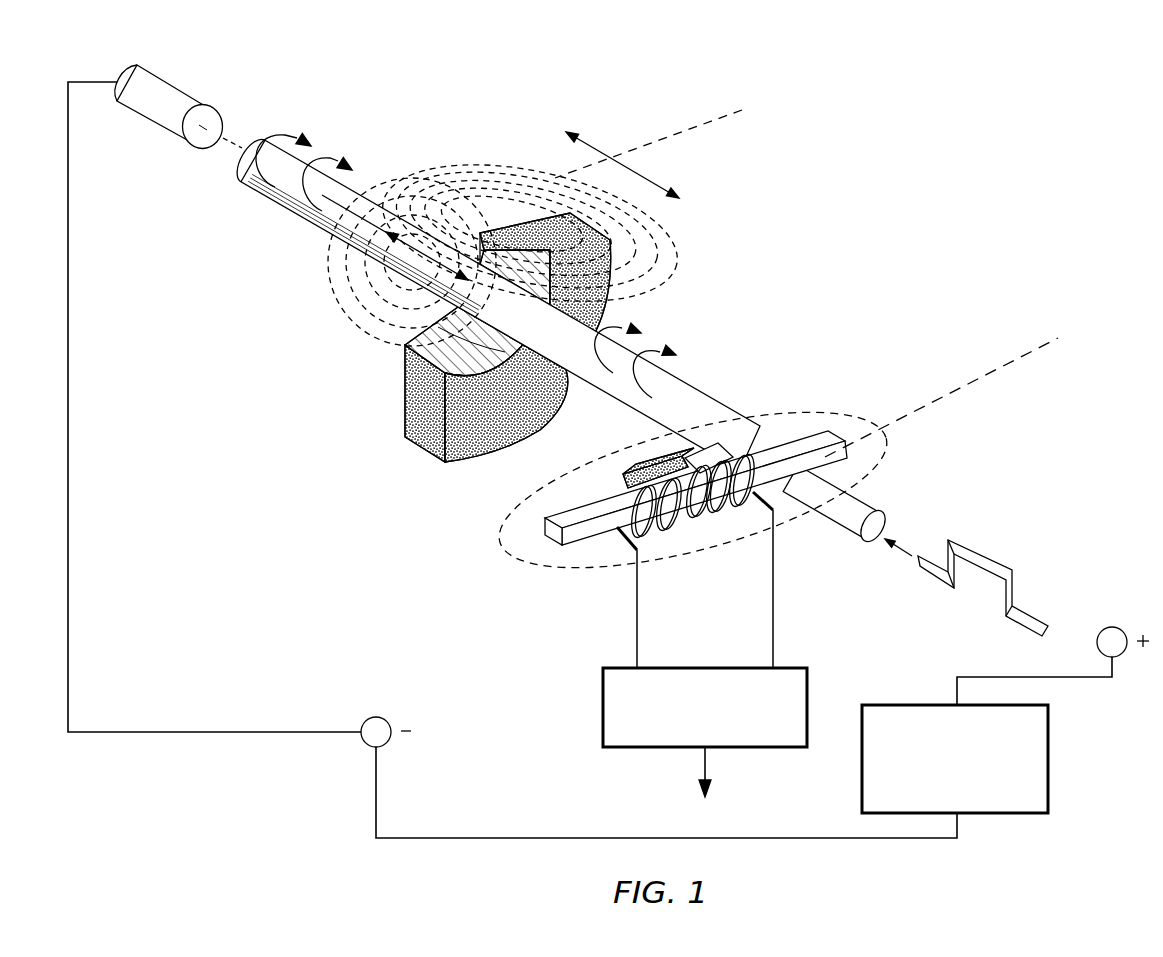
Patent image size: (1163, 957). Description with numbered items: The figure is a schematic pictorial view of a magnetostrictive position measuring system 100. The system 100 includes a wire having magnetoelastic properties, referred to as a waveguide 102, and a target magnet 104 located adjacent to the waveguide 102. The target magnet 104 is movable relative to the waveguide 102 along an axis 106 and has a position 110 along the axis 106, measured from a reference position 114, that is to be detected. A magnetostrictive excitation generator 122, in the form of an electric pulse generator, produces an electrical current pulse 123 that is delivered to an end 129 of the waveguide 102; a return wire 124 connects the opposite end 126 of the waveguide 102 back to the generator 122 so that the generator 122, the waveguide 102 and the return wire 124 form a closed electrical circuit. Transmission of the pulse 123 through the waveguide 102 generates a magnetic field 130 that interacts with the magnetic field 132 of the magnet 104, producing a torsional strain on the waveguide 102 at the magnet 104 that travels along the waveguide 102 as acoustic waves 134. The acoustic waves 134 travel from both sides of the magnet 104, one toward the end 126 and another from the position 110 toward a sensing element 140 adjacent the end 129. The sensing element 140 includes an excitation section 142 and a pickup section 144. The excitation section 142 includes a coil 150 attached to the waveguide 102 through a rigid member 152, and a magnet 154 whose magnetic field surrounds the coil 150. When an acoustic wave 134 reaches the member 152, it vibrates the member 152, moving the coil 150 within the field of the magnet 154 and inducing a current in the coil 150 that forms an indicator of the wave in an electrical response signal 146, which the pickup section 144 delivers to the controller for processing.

The magnetostrictive position measuring system 100 is at (908, 158).
The waveguide 102 is at (362, 196).
The target magnet 104 is at (410, 412).
The axis 106 is at (598, 150).
The position 110 is at (722, 118).
The reference position 114 is at (1037, 347).
The magnetostrictive excitation generator 122 is at (1044, 752).
The electrical current pulse 123 is at (983, 557).
The return wire 124 is at (192, 733).
The end of the waveguide 126 is at (178, 85).
The end of the waveguide 129 is at (864, 492).
The magnetic field 130 is at (330, 311).
The magnetic field of the magnet 132 is at (503, 132).
The acoustic waves 134 is at (281, 137).
The sensing element 140 is at (499, 545).
The excitation section 142 is at (804, 414).
The pickup section 144 is at (608, 691).
The electrical response signal 146 is at (702, 767).
The coil 150 is at (700, 523).
The rigid member 152 is at (578, 521).
The magnet 154 is at (714, 445).